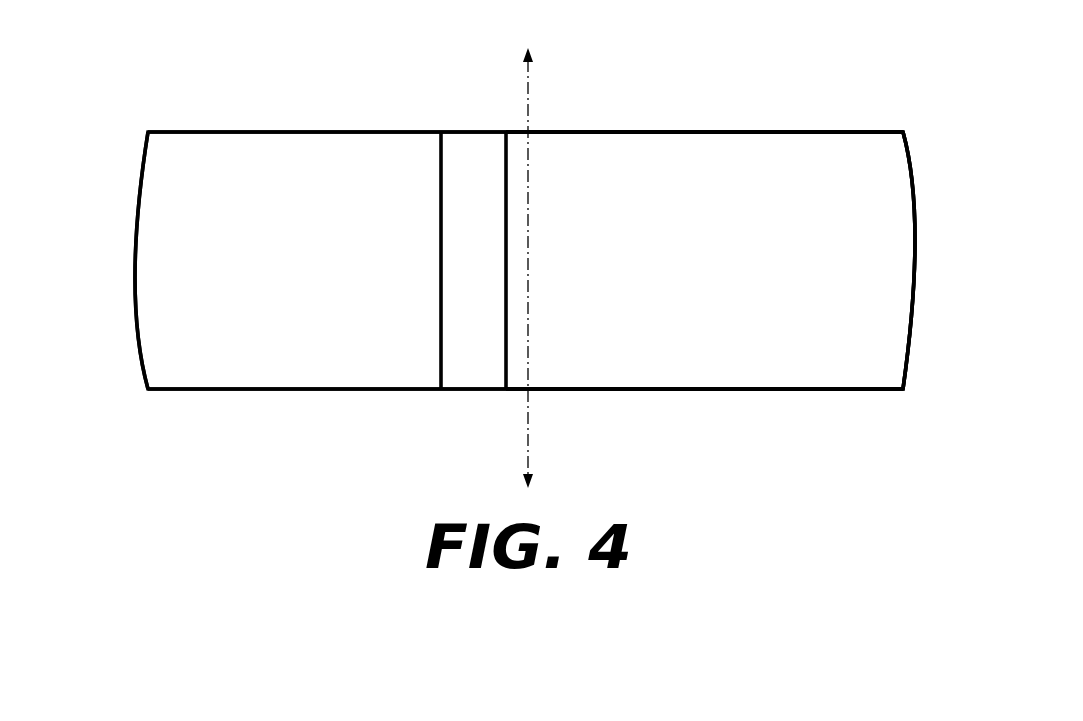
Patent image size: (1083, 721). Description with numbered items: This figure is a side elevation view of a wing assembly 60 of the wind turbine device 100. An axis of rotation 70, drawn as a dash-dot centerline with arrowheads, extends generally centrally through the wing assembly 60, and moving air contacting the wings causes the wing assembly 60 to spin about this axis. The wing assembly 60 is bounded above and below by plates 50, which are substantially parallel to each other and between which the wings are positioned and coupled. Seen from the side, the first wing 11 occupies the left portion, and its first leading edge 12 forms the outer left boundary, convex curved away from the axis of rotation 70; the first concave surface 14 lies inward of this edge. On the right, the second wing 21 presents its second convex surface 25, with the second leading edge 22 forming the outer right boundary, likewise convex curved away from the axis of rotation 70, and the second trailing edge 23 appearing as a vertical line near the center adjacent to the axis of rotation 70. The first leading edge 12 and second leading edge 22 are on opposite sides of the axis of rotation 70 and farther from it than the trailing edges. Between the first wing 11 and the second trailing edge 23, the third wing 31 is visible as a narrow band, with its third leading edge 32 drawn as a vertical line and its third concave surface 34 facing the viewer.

The wind turbine device 100 is at (300, 73).
The first wing 11 is at (290, 365).
The first leading edge 12 is at (143, 165).
The first concave surface 14 is at (250, 172).
The second wing 21 is at (785, 365).
The second leading edge 22 is at (909, 173).
The second trailing edge 23 is at (505, 283).
The second convex surface 25 is at (788, 160).
The third wing 31 is at (490, 365).
The third leading edge 32 is at (440, 275).
The third concave surface 34 is at (485, 157).
The plate 50 is at (628, 131).
The wing assembly 60 is at (740, 115).
The axis of rotation 70 is at (528, 103).